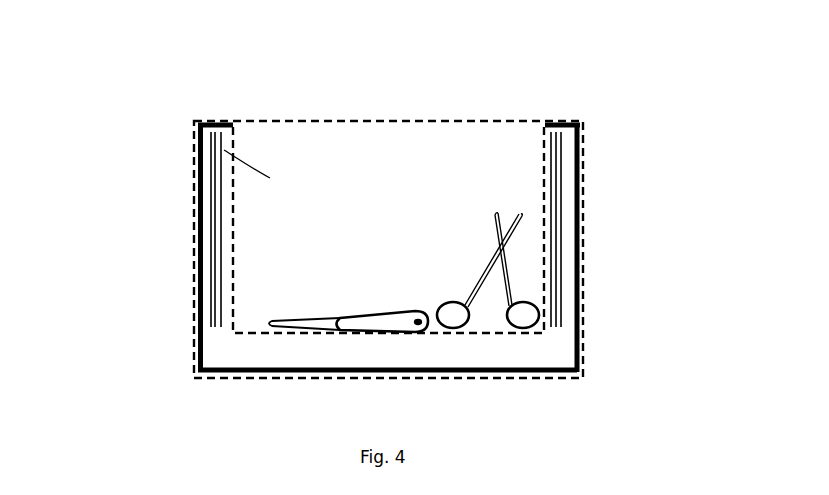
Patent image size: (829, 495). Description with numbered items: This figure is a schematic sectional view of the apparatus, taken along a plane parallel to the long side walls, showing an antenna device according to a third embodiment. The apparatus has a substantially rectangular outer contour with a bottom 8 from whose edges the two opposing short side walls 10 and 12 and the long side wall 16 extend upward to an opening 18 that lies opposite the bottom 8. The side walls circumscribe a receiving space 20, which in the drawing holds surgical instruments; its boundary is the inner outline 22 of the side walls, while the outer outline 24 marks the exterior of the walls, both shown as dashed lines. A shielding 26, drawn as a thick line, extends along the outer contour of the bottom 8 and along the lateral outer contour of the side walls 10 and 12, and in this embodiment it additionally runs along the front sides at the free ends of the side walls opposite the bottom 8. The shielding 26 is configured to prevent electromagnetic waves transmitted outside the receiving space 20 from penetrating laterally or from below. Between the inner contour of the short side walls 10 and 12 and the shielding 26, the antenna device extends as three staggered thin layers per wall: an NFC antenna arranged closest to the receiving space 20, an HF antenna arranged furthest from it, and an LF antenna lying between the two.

The bottom 8 is at (388, 401).
The short side wall 10 is at (158, 186).
The short side wall 12 is at (618, 262).
The long side wall 16 is at (400, 193).
The opening 18 is at (445, 121).
The receiving space 20 is at (202, 123).
The inner outline 22 is at (233, 284).
The outer outline 24 is at (197, 325).
The shielding 26 is at (224, 150).